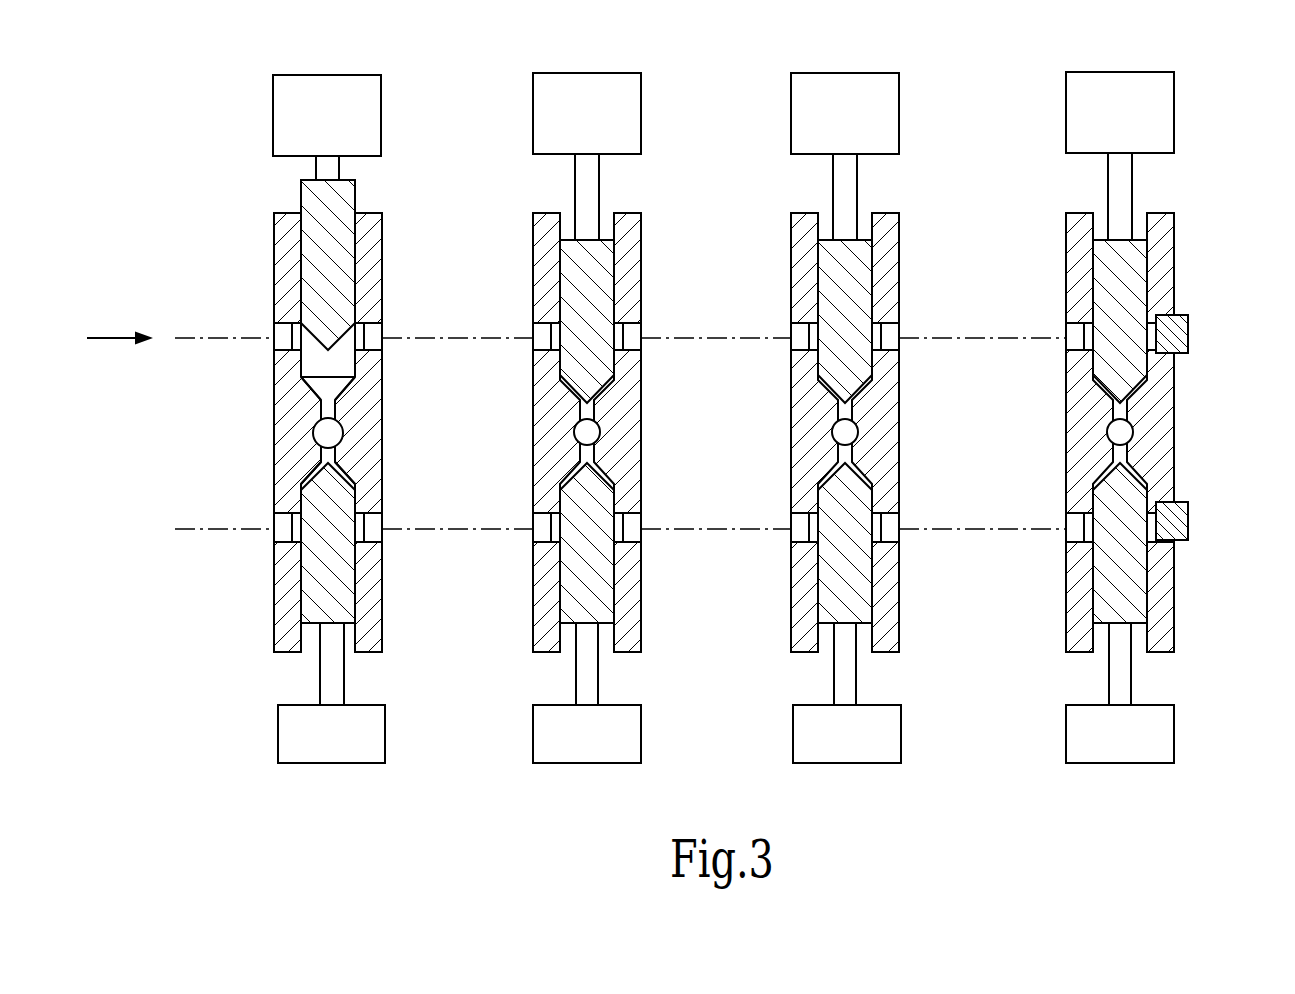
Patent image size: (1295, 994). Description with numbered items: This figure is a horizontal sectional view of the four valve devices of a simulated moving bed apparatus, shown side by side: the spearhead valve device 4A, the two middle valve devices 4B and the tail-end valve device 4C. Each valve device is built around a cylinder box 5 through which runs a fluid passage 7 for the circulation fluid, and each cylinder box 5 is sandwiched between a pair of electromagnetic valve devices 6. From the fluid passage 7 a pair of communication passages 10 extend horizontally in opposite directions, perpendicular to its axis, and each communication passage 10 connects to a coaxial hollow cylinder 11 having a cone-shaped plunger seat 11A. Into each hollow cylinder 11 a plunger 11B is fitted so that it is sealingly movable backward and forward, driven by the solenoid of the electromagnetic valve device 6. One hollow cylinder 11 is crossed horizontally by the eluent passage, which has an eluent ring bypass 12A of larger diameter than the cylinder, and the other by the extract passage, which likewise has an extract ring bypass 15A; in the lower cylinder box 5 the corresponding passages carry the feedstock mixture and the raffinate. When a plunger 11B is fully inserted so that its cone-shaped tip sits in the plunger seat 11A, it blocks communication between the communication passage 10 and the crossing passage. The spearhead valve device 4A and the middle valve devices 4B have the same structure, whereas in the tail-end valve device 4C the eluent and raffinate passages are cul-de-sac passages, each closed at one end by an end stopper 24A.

The spearhead valve device 4A is at (333, 456).
The middle valve device 4B is at (678, 443).
The tail-end valve device 4C is at (1105, 441).
The cylinder box 5 is at (693, 434).
The electromagnetic valve device 6 is at (299, 456).
The fluid passage 7 is at (771, 431).
The communication passage 10 is at (376, 429).
The hollow cylinder 11 is at (332, 436).
The plunger seat 11A is at (280, 409).
The plunger 11B is at (776, 401).
The eluent ring bypass 12A is at (255, 322).
The extract ring bypass 15A is at (416, 541).
The end stopper 24A is at (1225, 429).